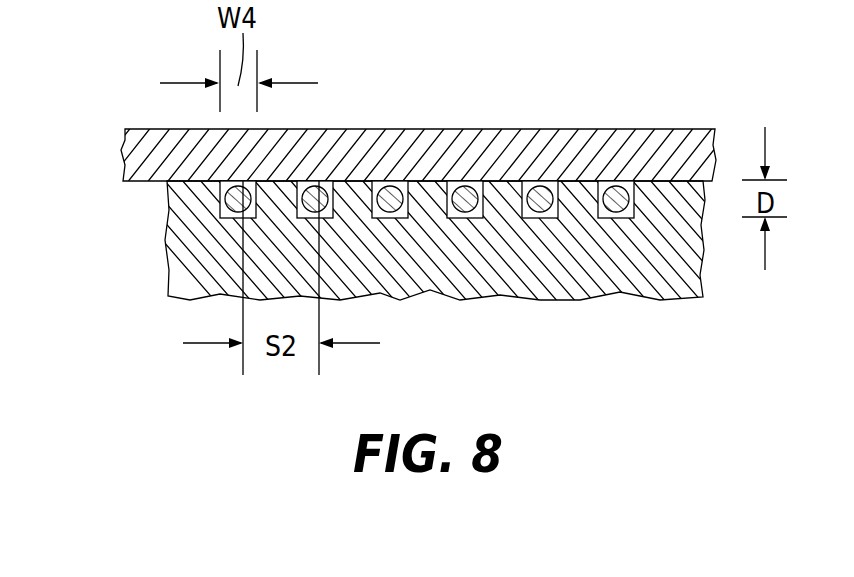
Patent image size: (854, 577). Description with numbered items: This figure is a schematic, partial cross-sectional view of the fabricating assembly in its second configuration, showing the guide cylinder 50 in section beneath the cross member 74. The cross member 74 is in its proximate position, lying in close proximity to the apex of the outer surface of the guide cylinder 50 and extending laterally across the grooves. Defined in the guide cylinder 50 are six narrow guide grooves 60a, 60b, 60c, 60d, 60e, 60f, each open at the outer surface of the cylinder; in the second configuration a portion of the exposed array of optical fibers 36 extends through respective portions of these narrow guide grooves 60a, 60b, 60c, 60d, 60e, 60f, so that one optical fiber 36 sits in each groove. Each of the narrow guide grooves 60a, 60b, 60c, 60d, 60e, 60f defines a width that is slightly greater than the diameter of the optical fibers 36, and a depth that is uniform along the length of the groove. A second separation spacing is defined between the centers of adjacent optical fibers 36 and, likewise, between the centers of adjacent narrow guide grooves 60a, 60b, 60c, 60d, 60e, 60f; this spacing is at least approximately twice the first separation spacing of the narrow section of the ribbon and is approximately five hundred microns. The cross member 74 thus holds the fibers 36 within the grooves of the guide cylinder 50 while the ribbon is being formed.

The cross member 74 is at (155, 130).
The guide cylinder 50 is at (383, 302).
The optical fibers 36 is at (242, 192).
The narrow guide groove 60a is at (633, 182).
The narrow guide groove 60b is at (557, 182).
The narrow guide groove 60c is at (483, 182).
The narrow guide groove 60d is at (407, 182).
The narrow guide groove 60e is at (333, 182).
The narrow guide groove 60f is at (225, 218).